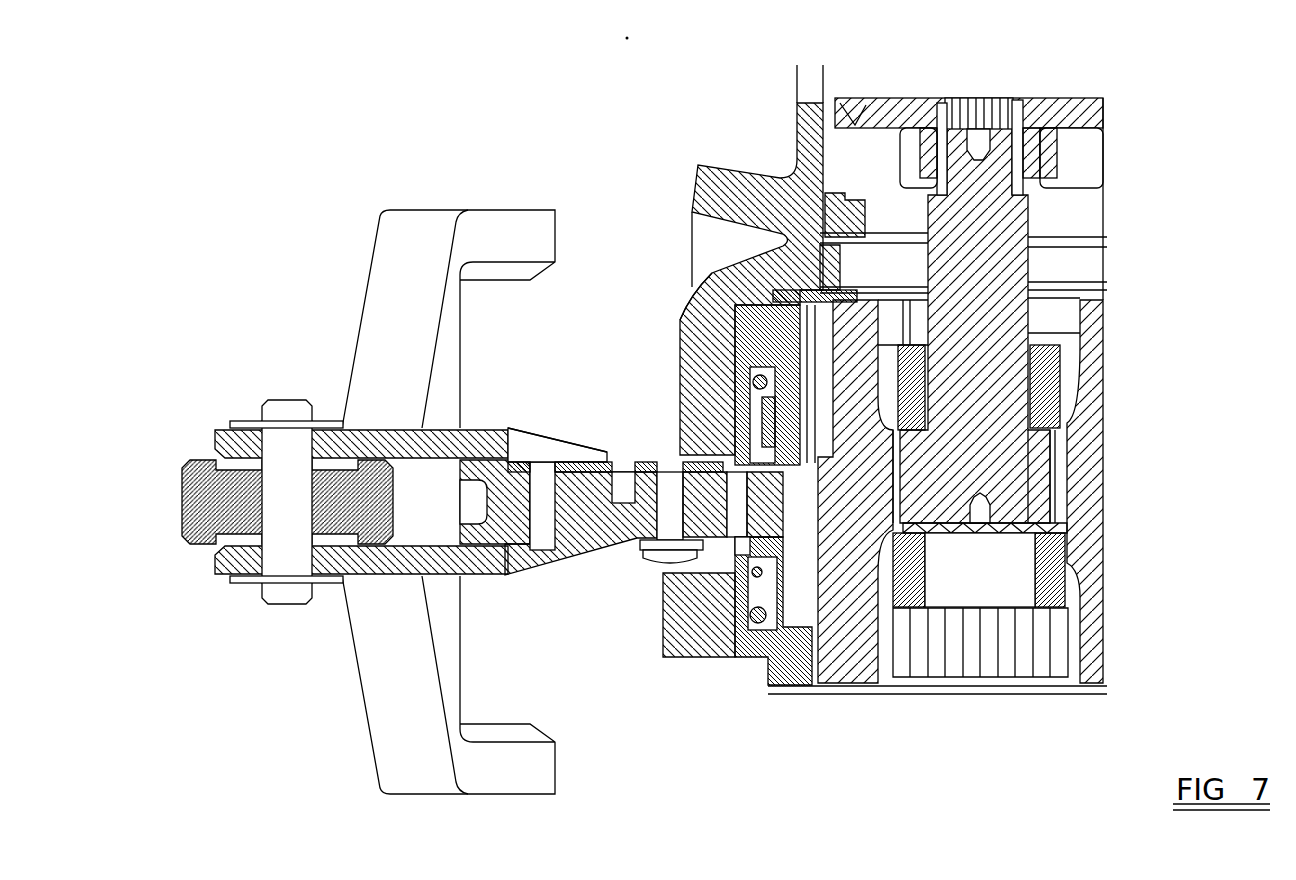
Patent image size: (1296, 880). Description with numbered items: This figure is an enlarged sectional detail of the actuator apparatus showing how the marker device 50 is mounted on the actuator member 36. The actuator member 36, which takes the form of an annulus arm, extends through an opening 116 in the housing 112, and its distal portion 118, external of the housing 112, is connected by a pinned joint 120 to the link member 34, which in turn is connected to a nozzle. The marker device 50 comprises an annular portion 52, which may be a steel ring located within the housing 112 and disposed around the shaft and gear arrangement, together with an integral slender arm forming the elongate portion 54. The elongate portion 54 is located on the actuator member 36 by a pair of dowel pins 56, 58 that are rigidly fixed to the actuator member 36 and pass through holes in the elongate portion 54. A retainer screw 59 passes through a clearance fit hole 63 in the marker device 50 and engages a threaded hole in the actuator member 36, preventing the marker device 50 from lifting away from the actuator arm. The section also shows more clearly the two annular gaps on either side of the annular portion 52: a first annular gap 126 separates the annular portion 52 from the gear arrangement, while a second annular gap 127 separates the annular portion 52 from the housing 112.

The link member 34 is at (405, 292).
The actuator member 36 is at (540, 517).
The marker device 50 is at (735, 430).
The annular portion 52 is at (735, 340).
The elongate portion 54 is at (565, 432).
The dowel pin 56 is at (568, 582).
The dowel pin 58 is at (738, 522).
The screw 59 is at (592, 458).
The clearance fit hole 63 is at (647, 542).
The housing 112 is at (745, 190).
The opening 116 is at (658, 453).
The distal portion 118 is at (367, 562).
The pinned joint 120 is at (272, 598).
The first annular gap 126 is at (710, 288).
The second annular gap 127 is at (735, 372).